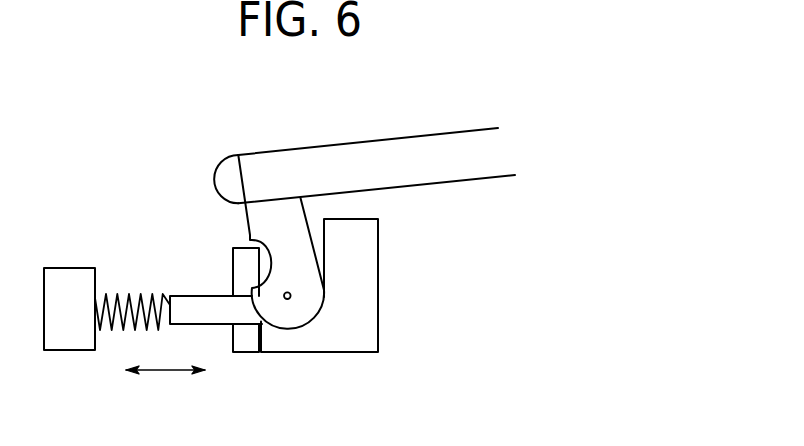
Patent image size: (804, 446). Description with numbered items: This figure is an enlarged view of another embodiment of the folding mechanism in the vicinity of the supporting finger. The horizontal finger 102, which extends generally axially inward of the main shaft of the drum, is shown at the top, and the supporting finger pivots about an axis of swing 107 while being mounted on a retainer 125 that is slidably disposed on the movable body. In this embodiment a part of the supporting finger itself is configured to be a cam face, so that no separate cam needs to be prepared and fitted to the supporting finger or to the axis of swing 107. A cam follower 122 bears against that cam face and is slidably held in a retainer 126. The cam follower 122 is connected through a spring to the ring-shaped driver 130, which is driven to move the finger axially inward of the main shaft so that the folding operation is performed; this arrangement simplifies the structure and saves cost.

The horizontal finger 102 is at (383, 140).
The axis of swing 107 is at (289, 300).
The cam follower 122 is at (192, 296).
The retainer 125 is at (378, 335).
The retainer 126 is at (242, 345).
The ring-shaped driver 130 is at (65, 268).